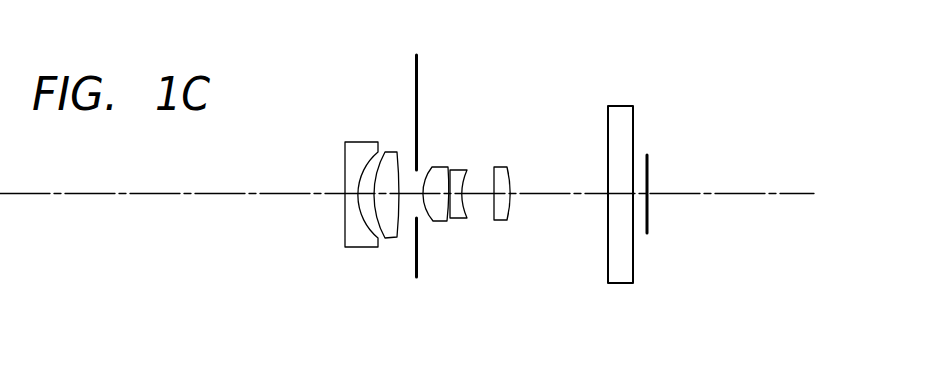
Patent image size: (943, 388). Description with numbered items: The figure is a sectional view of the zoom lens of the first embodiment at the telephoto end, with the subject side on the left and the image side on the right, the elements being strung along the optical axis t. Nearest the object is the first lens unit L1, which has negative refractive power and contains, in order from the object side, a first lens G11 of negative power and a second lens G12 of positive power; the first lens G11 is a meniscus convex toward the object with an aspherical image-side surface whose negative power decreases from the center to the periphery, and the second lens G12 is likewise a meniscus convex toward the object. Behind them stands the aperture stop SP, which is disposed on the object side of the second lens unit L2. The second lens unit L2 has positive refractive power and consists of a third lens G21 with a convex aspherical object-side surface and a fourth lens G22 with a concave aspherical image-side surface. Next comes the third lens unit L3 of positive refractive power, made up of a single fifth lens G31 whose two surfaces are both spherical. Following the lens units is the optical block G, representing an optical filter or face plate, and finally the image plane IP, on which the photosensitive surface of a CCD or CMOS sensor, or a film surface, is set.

The first lens unit L1 is at (405, 137).
The second lens unit L2 is at (472, 160).
The third lens unit L3 is at (512, 160).
The first lens G11 is at (363, 248).
The second lens G12 is at (393, 238).
The third lens G21 is at (437, 222).
The fourth lens G22 is at (465, 218).
The fifth lens G31 is at (502, 222).
The aperture stop SP is at (413, 80).
The optical block G is at (613, 117).
The image plane IP is at (650, 170).
The optical axis t is at (407, 211).